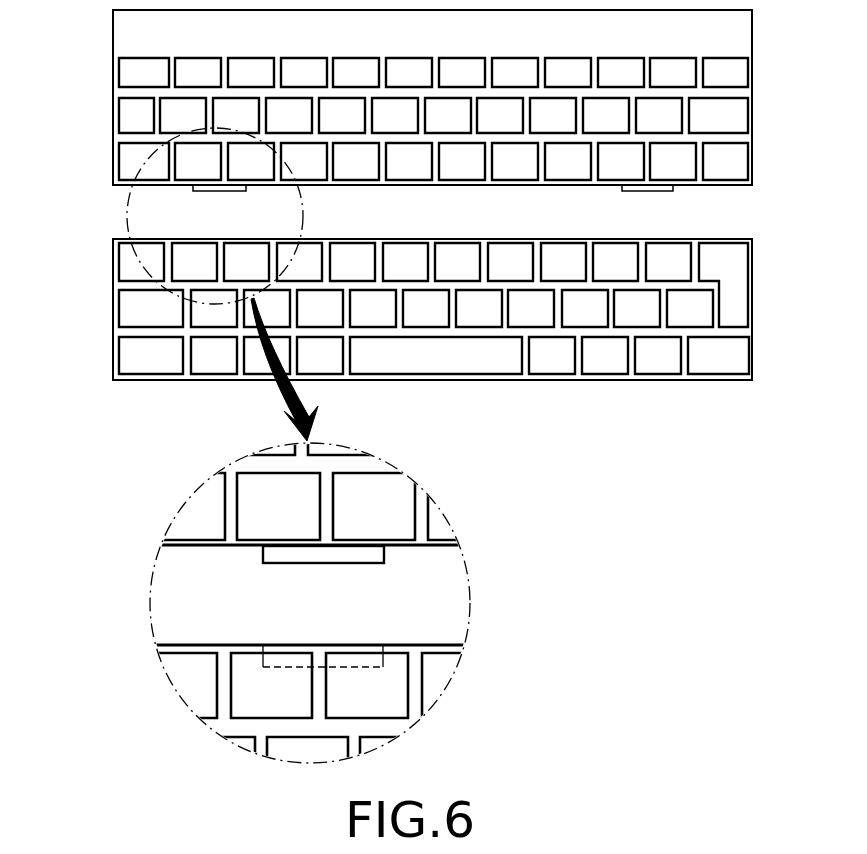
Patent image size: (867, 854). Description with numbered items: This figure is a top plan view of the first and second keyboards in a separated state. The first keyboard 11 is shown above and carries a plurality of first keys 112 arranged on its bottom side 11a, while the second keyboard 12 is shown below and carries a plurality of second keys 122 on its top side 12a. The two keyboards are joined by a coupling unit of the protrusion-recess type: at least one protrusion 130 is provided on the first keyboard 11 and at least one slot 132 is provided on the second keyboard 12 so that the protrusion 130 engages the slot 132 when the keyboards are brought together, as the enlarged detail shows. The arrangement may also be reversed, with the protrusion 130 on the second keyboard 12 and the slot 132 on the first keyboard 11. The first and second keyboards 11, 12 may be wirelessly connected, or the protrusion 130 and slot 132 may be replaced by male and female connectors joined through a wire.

The first keyboard 11 is at (388, 97).
The bottom side of first keyboard 11a is at (125, 40).
The first keys 112 is at (127, 162).
The second keyboard 12 is at (388, 309).
The top side of second keyboard 12a is at (127, 283).
The second keys 122 is at (127, 355).
The protrusion 130 is at (648, 192).
The slot 132 is at (322, 650).